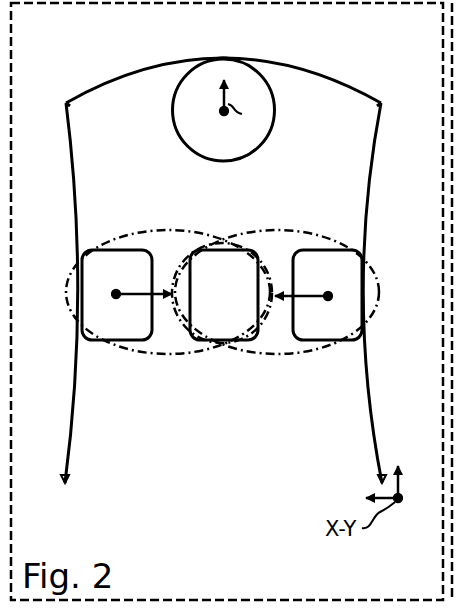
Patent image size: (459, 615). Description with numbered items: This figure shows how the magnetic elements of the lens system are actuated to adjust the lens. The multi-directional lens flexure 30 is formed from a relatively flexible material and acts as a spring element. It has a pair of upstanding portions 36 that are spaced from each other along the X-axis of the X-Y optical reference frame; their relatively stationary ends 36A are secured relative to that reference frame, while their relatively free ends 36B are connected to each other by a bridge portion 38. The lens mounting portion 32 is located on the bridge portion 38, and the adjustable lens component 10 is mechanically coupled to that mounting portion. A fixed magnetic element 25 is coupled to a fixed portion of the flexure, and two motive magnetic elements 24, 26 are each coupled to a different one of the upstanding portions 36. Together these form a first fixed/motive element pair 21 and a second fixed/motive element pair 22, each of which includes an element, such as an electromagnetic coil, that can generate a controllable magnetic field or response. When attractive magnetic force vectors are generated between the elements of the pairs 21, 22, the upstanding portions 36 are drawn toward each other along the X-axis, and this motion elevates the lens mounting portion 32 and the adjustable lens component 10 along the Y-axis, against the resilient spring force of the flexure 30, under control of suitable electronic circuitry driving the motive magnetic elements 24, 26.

The multi-directional lens flexure 30 is at (236, 267).
The bridge portion 38 is at (300, 66).
The relatively free ends 36B is at (70, 106).
The upstanding portions 36 is at (72, 177).
The relatively stationary ends 36A is at (70, 485).
The adjustable lens component 10 is at (251, 92).
The lens mounting portion 32 is at (223, 61).
The first fixed/motive element pair 21 is at (72, 318).
The second fixed/motive element pair 22 is at (375, 318).
The motive magnetic element 24 is at (118, 342).
The fixed magnetic element 25 is at (228, 343).
The motive magnetic element 26 is at (313, 342).